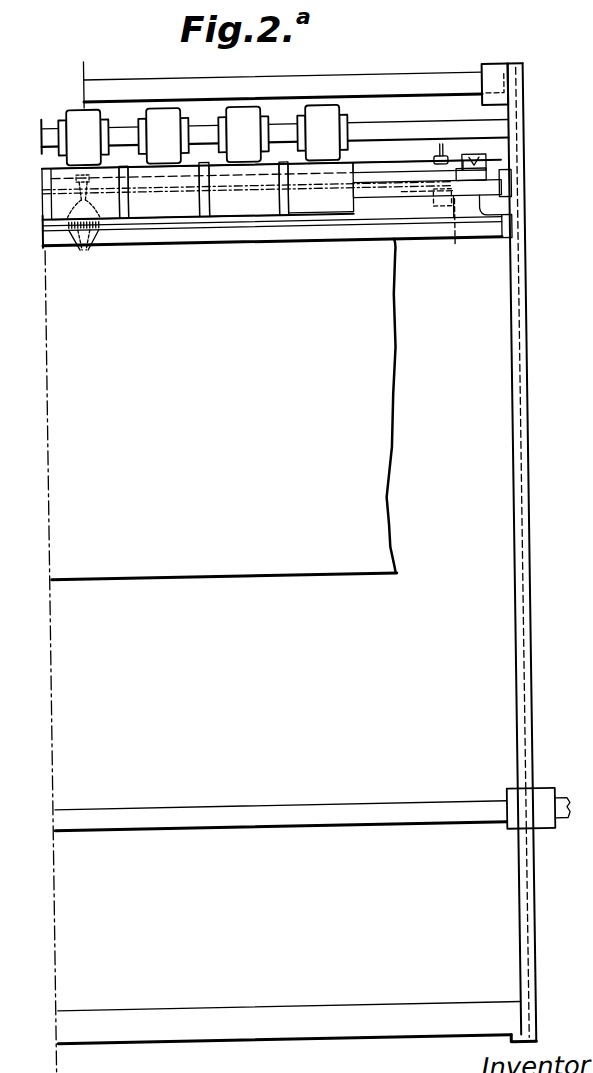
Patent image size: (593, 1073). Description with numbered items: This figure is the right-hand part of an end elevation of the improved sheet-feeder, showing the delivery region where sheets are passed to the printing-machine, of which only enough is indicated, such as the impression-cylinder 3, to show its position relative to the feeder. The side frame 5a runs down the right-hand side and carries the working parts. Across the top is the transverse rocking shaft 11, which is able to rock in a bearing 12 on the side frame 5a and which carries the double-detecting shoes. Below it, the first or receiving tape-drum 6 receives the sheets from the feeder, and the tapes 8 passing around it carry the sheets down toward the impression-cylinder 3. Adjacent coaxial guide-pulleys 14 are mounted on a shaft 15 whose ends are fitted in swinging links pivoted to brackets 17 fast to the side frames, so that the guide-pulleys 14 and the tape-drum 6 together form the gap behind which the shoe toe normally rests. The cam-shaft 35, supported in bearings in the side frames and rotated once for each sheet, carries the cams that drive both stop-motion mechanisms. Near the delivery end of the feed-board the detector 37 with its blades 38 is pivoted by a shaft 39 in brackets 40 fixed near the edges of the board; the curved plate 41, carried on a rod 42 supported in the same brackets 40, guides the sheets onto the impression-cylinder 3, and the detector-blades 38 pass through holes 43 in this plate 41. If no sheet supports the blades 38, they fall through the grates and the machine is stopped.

The impression-cylinder 3 is at (70, 384).
The side frame 5a is at (527, 926).
The receiving tape-drum 6 is at (249, 192).
The tapes 8 is at (198, 198).
The rocking shaft 11 is at (381, 86).
The bearing 12 is at (492, 95).
The guide-pulley 14 is at (203, 135).
The shaft 15 is at (450, 137).
The bracket 17 is at (535, 140).
The cam-shaft 35 is at (320, 246).
The detector 37 is at (112, 232).
The detector-blade 38 is at (80, 250).
The shaft 39 is at (427, 203).
The bracket 40 is at (470, 213).
The curved plate 41 is at (408, 189).
The rod 42 is at (397, 169).
The hole 43 is at (55, 248).